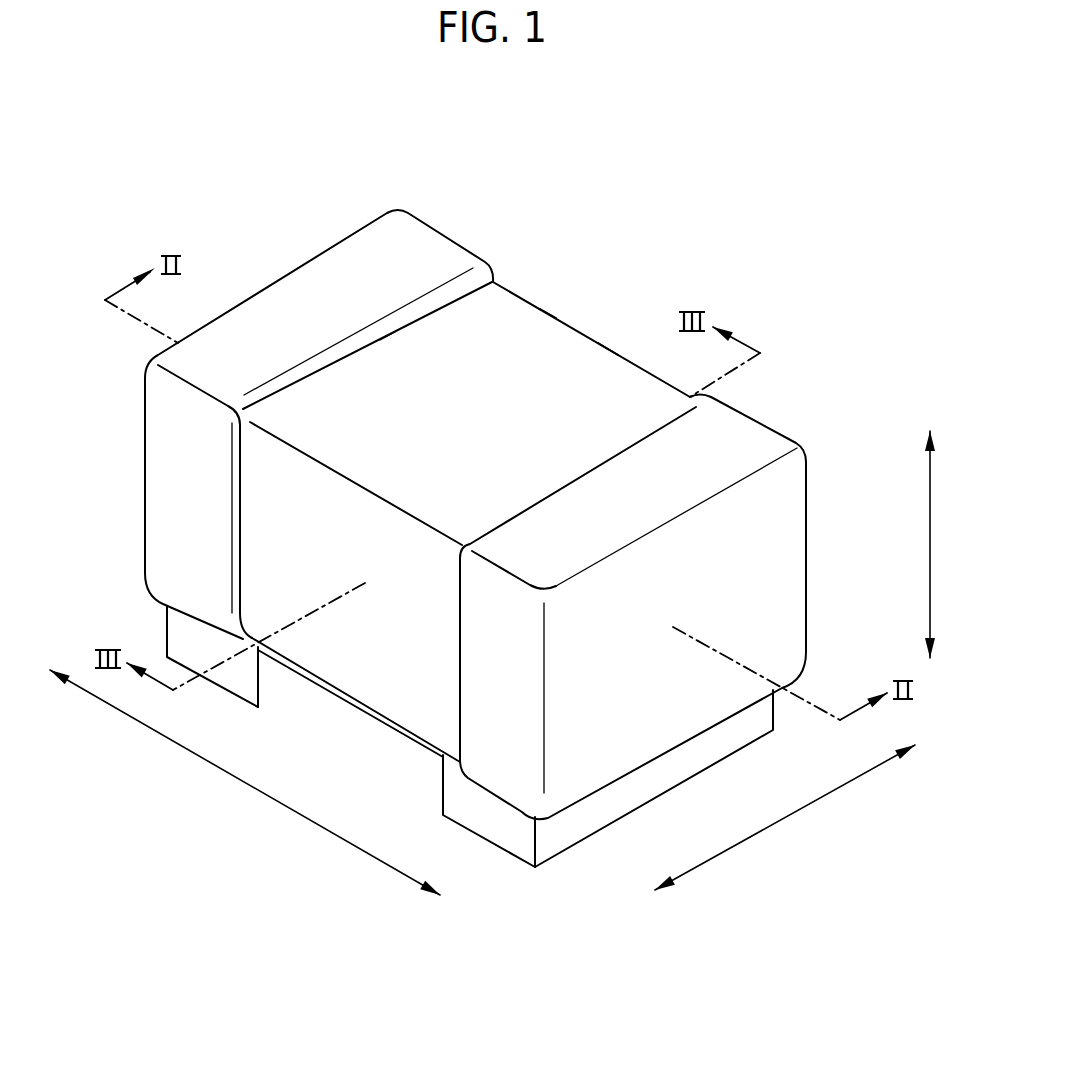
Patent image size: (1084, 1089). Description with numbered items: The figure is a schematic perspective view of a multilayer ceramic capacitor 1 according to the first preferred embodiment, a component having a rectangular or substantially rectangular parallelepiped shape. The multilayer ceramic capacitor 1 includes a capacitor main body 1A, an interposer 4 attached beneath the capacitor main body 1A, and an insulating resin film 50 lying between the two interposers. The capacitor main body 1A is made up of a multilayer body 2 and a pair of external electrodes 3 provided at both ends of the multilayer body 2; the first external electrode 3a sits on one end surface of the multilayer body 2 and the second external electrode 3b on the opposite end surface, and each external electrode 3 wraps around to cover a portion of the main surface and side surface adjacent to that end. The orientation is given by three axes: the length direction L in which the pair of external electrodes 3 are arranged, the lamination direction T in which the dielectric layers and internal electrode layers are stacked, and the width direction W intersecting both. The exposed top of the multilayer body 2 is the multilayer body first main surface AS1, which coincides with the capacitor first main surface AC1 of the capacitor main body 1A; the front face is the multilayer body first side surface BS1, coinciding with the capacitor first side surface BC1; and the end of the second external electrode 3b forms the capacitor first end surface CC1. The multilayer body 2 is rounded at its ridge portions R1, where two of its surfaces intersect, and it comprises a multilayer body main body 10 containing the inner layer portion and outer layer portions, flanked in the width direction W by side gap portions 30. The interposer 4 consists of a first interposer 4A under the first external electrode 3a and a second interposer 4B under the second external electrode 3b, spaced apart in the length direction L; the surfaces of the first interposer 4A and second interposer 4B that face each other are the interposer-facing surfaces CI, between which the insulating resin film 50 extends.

The multilayer ceramic capacitor 1 is at (840, 272).
The capacitor main body 1A is at (418, 163).
The multilayer body 2 is at (501, 330).
The external electrode 3 is at (489, 487).
The first external electrode 3a is at (411, 246).
The second external electrode 3b is at (758, 433).
The interposer 4 is at (408, 765).
The first interposer 4A is at (187, 649).
The second interposer 4B is at (500, 828).
The multilayer body main body 10 is at (390, 363).
The side gap portion 30 is at (607, 358).
The insulating resin film 50 is at (400, 725).
The ridge portion R1 is at (548, 312).
The multilayer body first main surface AS1 is at (457, 403).
The capacitor first main surface AC1 is at (568, 360).
The multilayer body first side surface BS1 is at (378, 532).
The capacitor first side surface BC1 is at (356, 494).
The capacitor first end surface CC1 is at (700, 598).
The interposer-facing surface CI is at (277, 680).
The length direction L is at (245, 782).
The width direction W is at (785, 817).
The lamination direction T is at (942, 544).